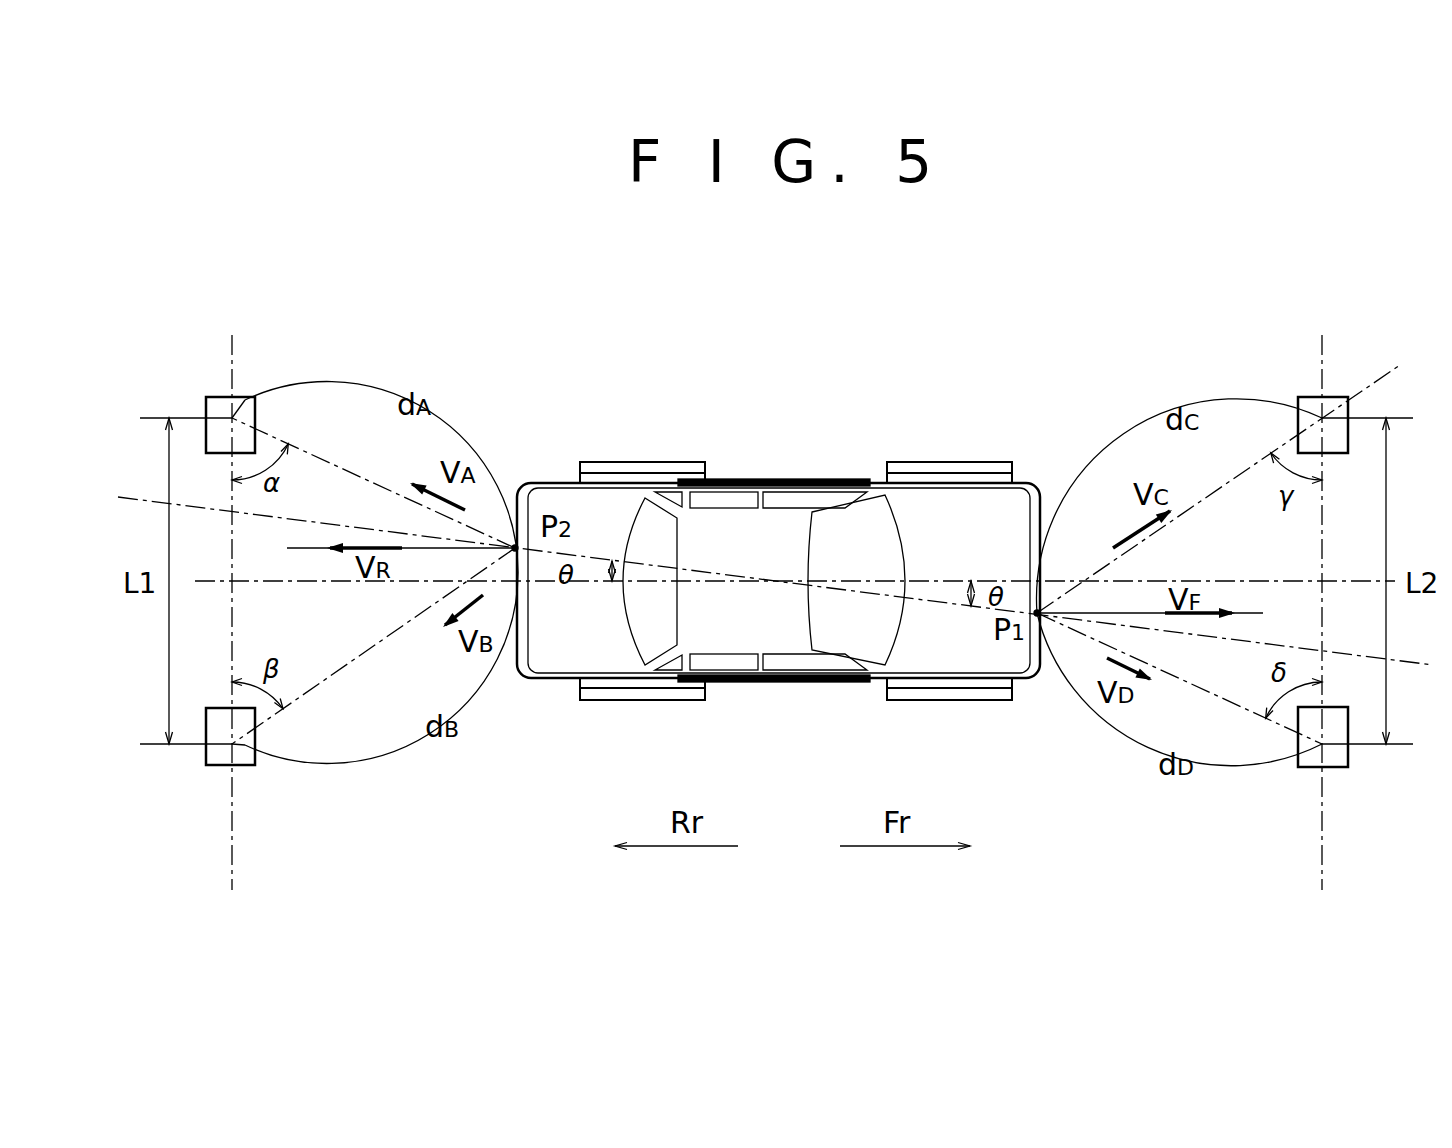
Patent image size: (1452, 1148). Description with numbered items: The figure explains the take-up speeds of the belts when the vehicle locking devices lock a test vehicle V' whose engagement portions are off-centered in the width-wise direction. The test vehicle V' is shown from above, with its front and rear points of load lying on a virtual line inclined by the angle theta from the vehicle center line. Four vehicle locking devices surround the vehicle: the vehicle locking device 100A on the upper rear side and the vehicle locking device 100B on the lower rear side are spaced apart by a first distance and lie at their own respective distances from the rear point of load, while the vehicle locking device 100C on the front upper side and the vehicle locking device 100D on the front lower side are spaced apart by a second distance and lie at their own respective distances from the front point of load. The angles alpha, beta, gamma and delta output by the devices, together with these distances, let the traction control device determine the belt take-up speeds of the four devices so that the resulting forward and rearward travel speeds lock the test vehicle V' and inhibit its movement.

The vehicle locking device 100A is at (245, 400).
The vehicle locking device 100B is at (253, 765).
The vehicle locking device 100C is at (1338, 398).
The vehicle locking device 100D is at (1338, 768).
The test vehicle V' is at (778, 518).